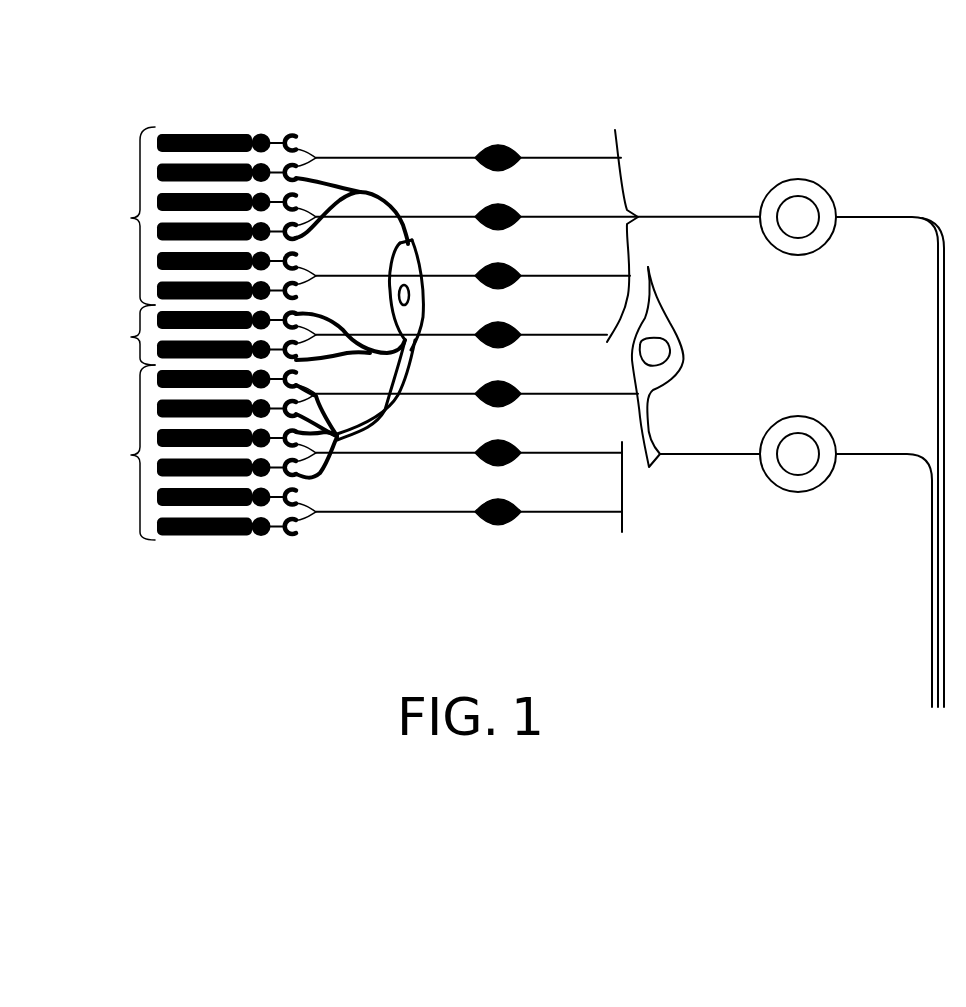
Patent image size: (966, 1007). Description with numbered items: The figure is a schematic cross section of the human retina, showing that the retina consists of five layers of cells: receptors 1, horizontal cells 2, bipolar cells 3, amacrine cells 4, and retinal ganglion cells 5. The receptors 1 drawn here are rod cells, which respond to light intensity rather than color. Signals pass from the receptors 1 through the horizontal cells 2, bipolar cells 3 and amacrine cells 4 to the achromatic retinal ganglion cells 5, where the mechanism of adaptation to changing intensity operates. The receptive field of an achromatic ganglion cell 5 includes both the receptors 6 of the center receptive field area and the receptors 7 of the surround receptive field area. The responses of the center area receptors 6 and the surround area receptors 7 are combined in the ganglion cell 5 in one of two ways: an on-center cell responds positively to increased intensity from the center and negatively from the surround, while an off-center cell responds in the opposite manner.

The receptors 1 is at (207, 537).
The horizontal cells 2 is at (407, 258).
The bipolar cells 3 is at (498, 146).
The amacrine cells 4 is at (655, 464).
The retinal ganglion cells 5 is at (805, 185).
The receptors of the center receptive field area 6 is at (124, 335).
The receptors of the surround receptive field area 7 is at (125, 333).